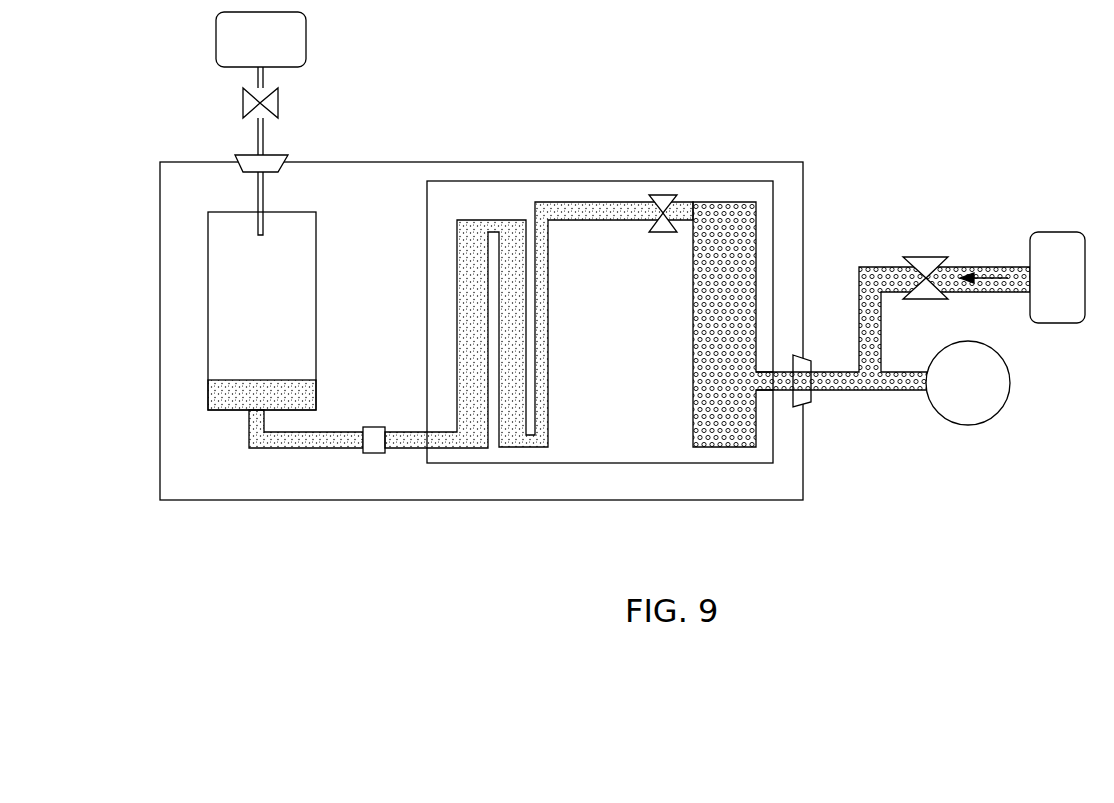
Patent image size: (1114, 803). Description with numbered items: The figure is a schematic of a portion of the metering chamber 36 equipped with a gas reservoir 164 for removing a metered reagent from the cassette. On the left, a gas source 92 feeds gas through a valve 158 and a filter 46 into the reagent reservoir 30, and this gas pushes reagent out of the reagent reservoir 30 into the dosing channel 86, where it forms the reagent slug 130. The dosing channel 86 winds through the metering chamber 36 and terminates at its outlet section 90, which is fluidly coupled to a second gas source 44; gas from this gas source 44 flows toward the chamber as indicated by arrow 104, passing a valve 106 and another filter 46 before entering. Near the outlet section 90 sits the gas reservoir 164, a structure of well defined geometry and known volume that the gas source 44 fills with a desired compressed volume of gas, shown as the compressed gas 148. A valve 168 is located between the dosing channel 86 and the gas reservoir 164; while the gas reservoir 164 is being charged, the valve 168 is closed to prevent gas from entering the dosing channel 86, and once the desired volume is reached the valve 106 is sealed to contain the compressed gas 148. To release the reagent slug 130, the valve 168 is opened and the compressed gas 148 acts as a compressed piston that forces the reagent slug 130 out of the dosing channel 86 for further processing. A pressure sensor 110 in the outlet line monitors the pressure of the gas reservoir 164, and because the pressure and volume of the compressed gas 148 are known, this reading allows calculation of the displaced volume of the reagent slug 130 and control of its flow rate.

The reagent reservoir 30 is at (317, 264).
The metering chamber 36 is at (427, 198).
The gas source 44 is at (1053, 232).
The filter 46 is at (234, 155).
The dosing channel 86 is at (548, 338).
The outlet section 90 is at (843, 343).
The gas source 92 is at (307, 41).
The arrow 104 is at (980, 275).
The valve 106 is at (922, 255).
The pressure sensor 110 is at (1011, 383).
The reagent slug 130 is at (567, 213).
The compressed gas 148 is at (697, 324).
The valve 158 is at (283, 101).
The gas reservoir 164 is at (693, 377).
The valve 168 is at (662, 232).